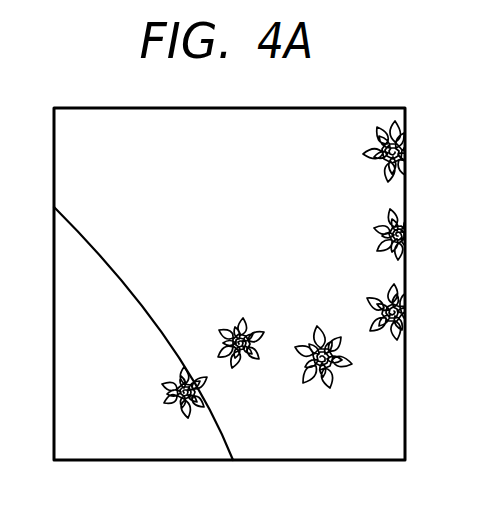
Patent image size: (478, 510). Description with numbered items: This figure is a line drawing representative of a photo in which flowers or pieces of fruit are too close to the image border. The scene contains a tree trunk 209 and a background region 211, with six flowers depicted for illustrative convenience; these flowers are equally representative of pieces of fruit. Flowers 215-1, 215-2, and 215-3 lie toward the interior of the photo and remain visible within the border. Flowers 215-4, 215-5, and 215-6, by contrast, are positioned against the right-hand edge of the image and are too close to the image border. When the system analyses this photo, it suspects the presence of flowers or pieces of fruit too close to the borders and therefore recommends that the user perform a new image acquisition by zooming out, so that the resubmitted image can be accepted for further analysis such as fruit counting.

The tree trunk 209 is at (150, 186).
The background region 211 is at (105, 314).
The flower 215-1 is at (161, 402).
The flower 215-2 is at (241, 322).
The flower 215-3 is at (316, 392).
The flower 215-4 is at (372, 139).
The flower 215-5 is at (382, 220).
The flower 215-6 is at (373, 292).